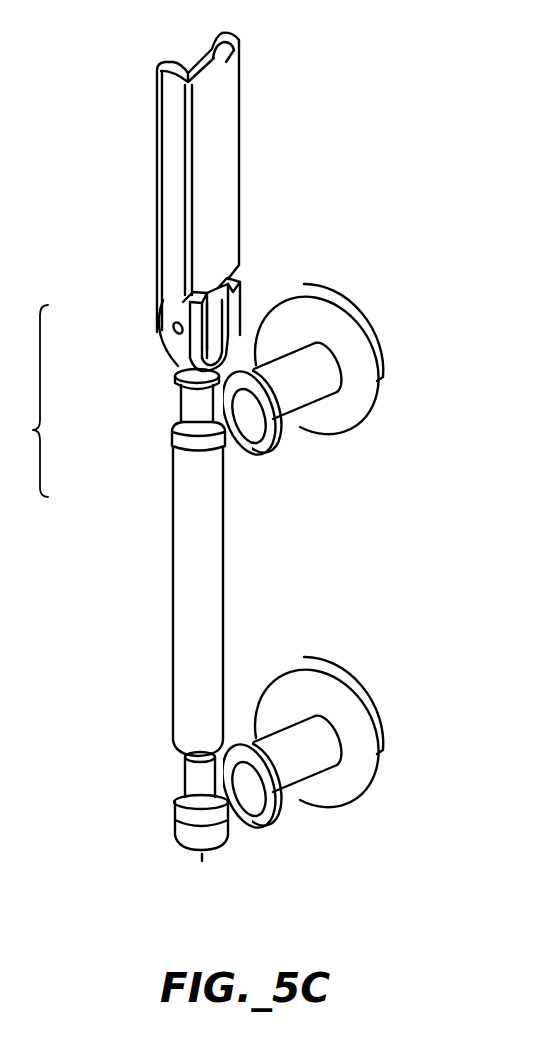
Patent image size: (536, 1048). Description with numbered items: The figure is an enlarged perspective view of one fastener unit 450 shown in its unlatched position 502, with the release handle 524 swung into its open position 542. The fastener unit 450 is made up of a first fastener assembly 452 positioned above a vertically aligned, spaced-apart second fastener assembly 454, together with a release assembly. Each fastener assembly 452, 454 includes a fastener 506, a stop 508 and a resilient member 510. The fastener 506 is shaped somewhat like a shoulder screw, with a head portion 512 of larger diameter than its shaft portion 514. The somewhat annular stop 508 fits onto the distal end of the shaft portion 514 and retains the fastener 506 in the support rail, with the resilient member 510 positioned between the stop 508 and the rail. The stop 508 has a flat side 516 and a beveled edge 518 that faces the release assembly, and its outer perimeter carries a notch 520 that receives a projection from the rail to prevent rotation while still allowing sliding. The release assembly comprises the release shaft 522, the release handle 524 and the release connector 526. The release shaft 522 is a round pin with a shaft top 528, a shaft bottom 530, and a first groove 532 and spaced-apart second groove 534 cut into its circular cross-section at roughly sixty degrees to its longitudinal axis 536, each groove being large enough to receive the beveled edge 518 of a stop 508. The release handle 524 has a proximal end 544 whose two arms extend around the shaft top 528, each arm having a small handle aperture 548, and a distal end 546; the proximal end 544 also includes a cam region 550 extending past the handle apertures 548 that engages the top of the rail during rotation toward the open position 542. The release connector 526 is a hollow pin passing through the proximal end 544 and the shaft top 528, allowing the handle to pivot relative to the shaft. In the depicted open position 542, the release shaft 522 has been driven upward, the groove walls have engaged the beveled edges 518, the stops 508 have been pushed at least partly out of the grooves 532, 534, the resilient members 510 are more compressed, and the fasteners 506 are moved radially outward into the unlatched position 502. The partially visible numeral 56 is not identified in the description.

The fastener unit 450 is at (302, 200).
The unlatched position 502 is at (337, 258).
The open position 542 is at (257, 86).
The distal end 546 is at (223, 82).
The shaft top 528 is at (242, 300).
The handle aperture 548 is at (176, 320).
The release handle 524 is at (176, 165).
The release connector 526 is at (164, 332).
The proximal end 544 is at (167, 345).
The cam region 550 is at (175, 382).
The first groove 532 is at (175, 422).
The release shaft 522 is at (172, 510).
The rail assembly 56 is at (24, 401).
The fastener 506 is at (318, 430).
The resilient member 510 is at (258, 440).
The stop 508 is at (249, 455).
The first fastener assembly 452 is at (412, 431).
The second fastener assembly 454 is at (436, 654).
The head portion 512 is at (342, 704).
The shaft portion 514 is at (318, 742).
The notch 520 is at (300, 790).
The flat side 516 is at (257, 817).
The beveled edge 518 is at (246, 830).
The second groove 534 is at (182, 778).
The shaft bottom 530 is at (184, 847).
The longitudinal axis 536 is at (198, 862).